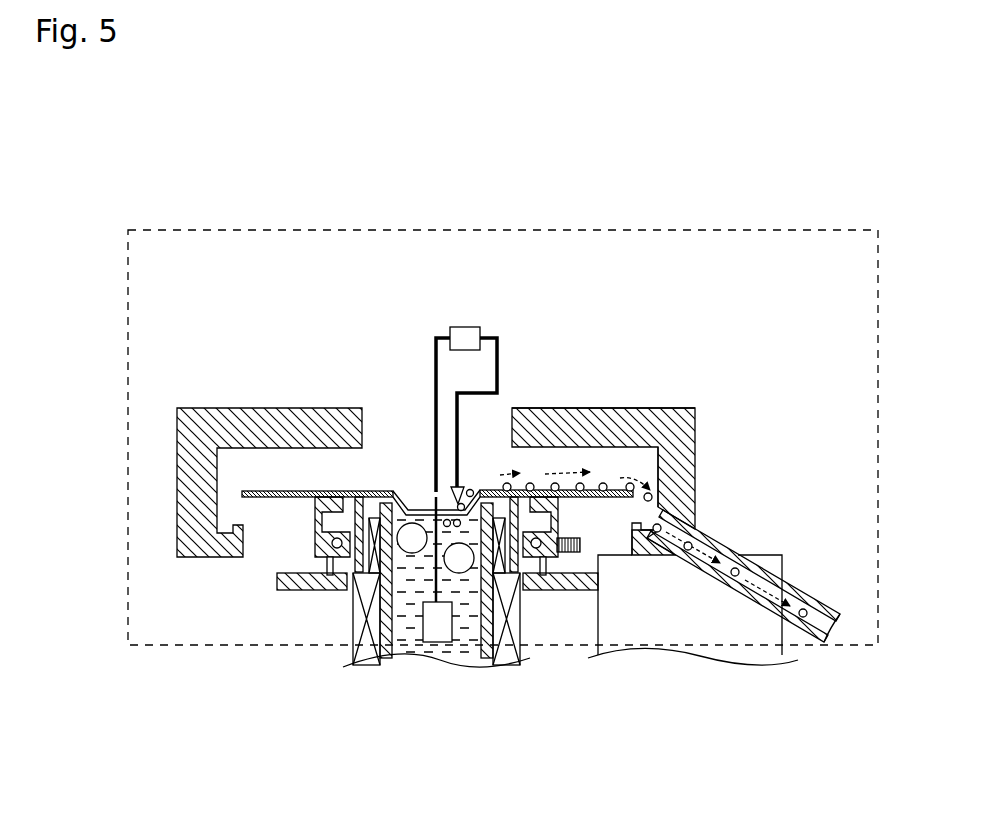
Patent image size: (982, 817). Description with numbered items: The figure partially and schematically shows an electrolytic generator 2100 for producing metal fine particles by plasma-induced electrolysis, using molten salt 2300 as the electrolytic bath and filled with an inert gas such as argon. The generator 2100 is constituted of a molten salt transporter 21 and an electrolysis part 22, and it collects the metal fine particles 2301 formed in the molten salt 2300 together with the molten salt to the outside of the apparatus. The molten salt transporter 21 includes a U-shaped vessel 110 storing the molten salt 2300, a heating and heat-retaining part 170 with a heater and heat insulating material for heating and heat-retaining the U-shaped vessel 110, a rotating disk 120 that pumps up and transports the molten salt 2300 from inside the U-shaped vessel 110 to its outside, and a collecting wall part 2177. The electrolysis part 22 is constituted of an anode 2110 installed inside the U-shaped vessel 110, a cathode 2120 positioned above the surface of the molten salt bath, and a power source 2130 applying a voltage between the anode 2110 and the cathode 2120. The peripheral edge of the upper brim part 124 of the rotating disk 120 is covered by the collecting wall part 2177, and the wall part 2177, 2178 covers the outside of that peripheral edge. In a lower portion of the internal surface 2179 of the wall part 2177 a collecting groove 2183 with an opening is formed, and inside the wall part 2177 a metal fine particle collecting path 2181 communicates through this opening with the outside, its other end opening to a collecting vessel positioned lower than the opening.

The electrolytic generator 2100 is at (590, 222).
The power source 2130 is at (464, 325).
The electrolysis part 22 is at (512, 388).
The cathode 2120 is at (462, 484).
The rotating disk 120 is at (412, 470).
The molten salt transporter 21 is at (350, 483).
The metal fine particles 2301 is at (603, 485).
The wall part 2178 is at (622, 408).
The internal surface 2179 is at (662, 456).
The collecting wall part 2177 is at (688, 498).
The upper brim part 124 is at (618, 500).
The metal fine particle collecting path 2181 is at (806, 610).
The collecting groove 2183 is at (648, 532).
The heating and heat-retaining part 170 is at (338, 573).
The U-shaped vessel 110 is at (493, 607).
The molten salt 2300 is at (470, 645).
The anode 2110 is at (440, 650).